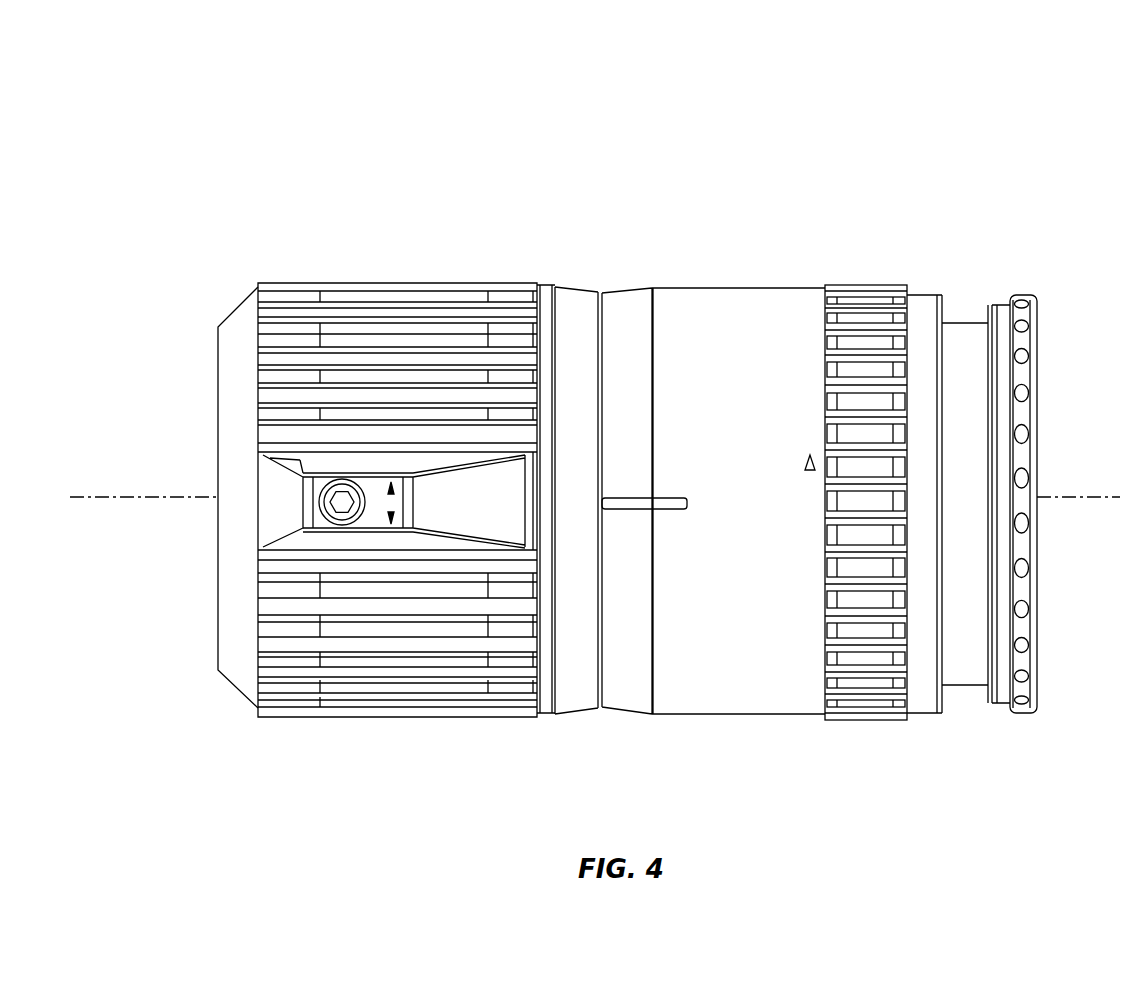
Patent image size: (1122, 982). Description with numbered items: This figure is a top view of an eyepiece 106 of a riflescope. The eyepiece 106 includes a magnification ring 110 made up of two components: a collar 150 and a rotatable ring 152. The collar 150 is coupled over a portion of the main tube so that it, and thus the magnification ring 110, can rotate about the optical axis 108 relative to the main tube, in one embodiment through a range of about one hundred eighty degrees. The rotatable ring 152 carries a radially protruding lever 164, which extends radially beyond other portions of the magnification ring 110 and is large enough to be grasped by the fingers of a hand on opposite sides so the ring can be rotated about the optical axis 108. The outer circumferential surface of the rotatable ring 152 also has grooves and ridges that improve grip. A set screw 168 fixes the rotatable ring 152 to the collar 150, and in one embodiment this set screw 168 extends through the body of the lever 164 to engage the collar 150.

The eyepiece 106 is at (700, 207).
The optical axis 108 is at (103, 492).
The magnification ring 110 is at (352, 742).
The collar 150 is at (598, 613).
The rotatable ring 152 is at (350, 284).
The lever 164 is at (303, 497).
The set screw 168 is at (317, 503).